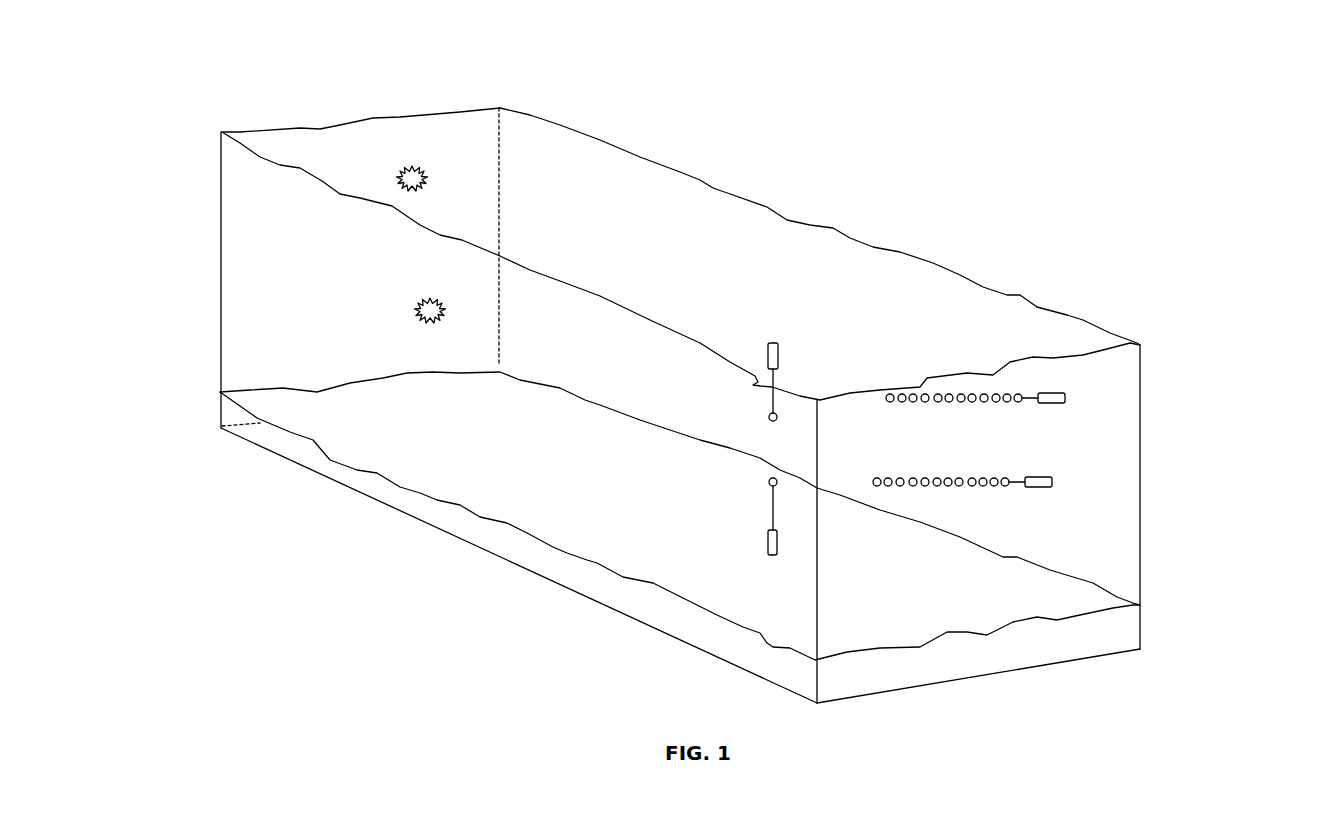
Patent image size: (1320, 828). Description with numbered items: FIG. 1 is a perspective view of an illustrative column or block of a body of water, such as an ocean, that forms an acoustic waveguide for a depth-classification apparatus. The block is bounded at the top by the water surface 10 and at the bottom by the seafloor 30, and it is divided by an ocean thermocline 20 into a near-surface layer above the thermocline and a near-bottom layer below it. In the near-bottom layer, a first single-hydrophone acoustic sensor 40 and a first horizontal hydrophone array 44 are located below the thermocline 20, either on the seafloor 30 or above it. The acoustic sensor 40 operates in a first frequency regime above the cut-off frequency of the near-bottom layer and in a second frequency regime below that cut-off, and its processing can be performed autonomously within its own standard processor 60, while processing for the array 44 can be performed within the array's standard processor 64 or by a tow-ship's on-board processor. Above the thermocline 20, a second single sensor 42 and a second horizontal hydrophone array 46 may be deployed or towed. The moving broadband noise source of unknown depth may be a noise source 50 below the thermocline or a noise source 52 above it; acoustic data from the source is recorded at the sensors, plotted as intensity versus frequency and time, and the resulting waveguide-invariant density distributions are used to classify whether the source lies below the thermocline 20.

The water surface 10 is at (773, 207).
The ocean thermocline 20 is at (710, 297).
The seafloor 30 is at (933, 597).
The acoustic sensor 40 is at (562, 566).
The second single sensor 42 is at (769, 418).
The first horizontal hydrophone array 44 is at (1081, 487).
The second horizontal hydrophone array 46 is at (970, 397).
The noise source 50 is at (418, 311).
The noise source 52 is at (404, 172).
The standard processor 60 is at (767, 545).
The standard processor 64 is at (1043, 485).